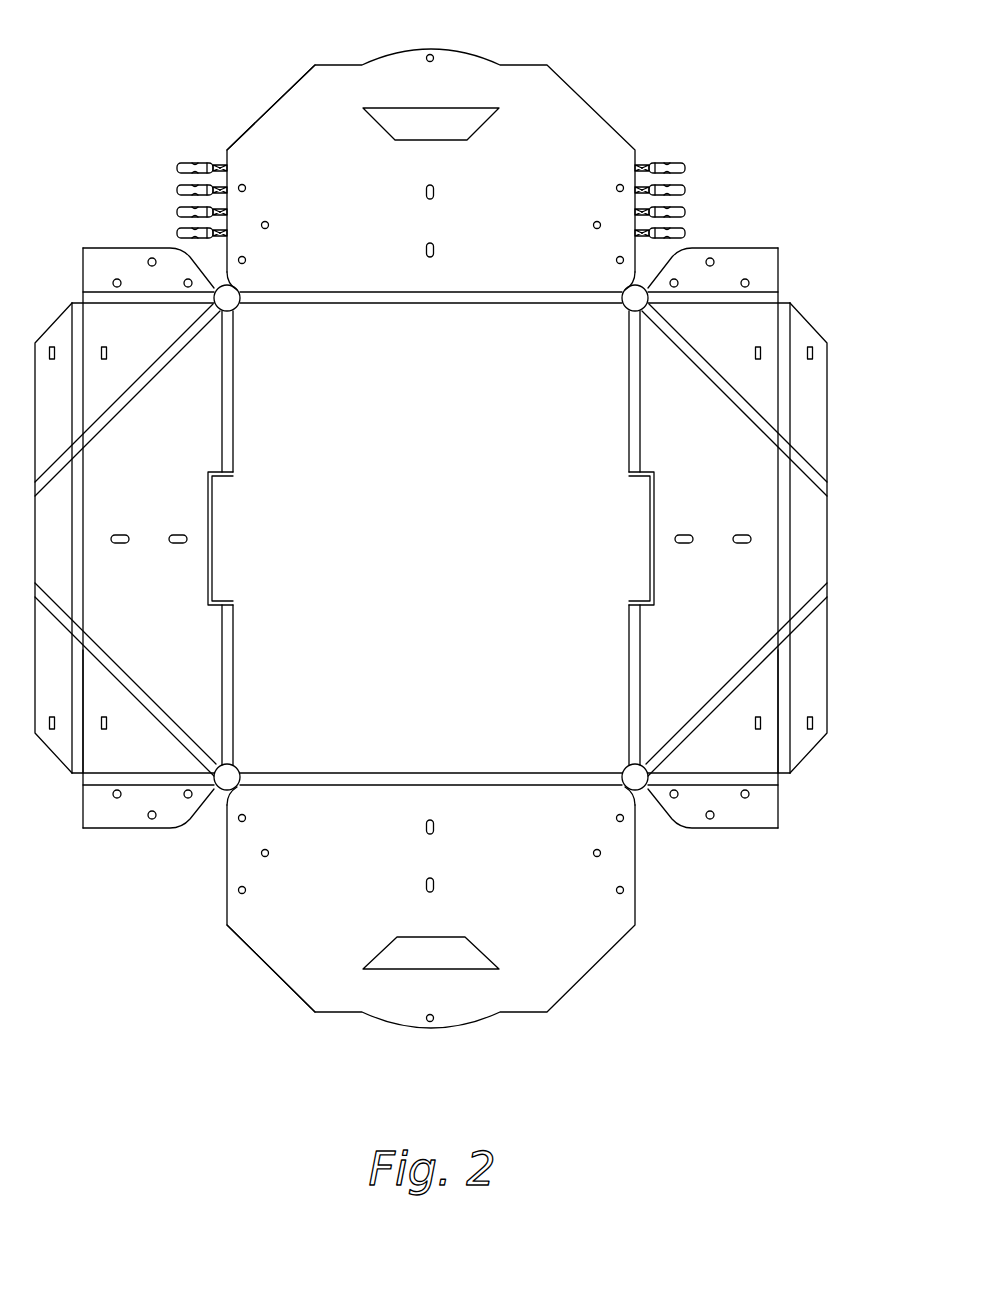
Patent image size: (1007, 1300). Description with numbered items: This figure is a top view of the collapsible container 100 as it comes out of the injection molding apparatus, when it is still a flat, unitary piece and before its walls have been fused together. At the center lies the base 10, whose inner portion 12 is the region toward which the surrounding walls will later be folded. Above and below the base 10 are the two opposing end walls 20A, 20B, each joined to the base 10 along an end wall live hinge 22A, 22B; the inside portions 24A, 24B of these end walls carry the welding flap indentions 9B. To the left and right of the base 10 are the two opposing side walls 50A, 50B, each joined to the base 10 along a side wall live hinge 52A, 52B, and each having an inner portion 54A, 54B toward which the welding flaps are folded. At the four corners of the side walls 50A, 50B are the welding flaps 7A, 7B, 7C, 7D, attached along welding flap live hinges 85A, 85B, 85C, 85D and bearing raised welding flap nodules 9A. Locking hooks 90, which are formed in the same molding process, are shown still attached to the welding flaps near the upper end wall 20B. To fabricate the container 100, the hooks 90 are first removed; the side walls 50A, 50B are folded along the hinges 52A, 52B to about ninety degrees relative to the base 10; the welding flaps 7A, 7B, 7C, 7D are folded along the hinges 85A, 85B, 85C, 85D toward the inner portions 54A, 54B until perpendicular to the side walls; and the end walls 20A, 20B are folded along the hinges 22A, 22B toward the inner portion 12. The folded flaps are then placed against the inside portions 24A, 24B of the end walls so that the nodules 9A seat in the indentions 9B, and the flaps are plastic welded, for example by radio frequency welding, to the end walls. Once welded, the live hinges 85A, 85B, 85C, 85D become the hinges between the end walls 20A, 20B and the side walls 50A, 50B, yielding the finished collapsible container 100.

The collapsible container 100 is at (660, 49).
The locking hooks 90 is at (673, 163).
The end wall 20A is at (465, 1012).
The end wall 20B is at (463, 65).
The inside portion of end wall 24A is at (307, 987).
The inside portion of end wall 24B is at (305, 90).
The end wall live hinge 22A is at (487, 780).
The end wall live hinge 22B is at (487, 297).
The inner portion of base 12 is at (285, 386).
The base 10 is at (578, 388).
The side wall 50A is at (178, 447).
The side wall 50B is at (684, 447).
The side wall live hinge 52A is at (226, 641).
The side wall live hinge 52B is at (636, 641).
The inner portion of side wall 54A is at (103, 692).
The inner portion of side wall 54B is at (759, 692).
The welding flap 7A is at (95, 260).
The welding flap 7B is at (97, 820).
The welding flap 7C is at (767, 260).
The welding flap 7D is at (766, 820).
The raised welding flap nodules 9A is at (152, 255).
The welding flap indentions 9B is at (246, 188).
The welding flap live hinge 85A is at (152, 297).
The welding flap live hinge 85B is at (120, 780).
The welding flap live hinge 85C is at (710, 297).
The welding flap live hinge 85D is at (742, 780).